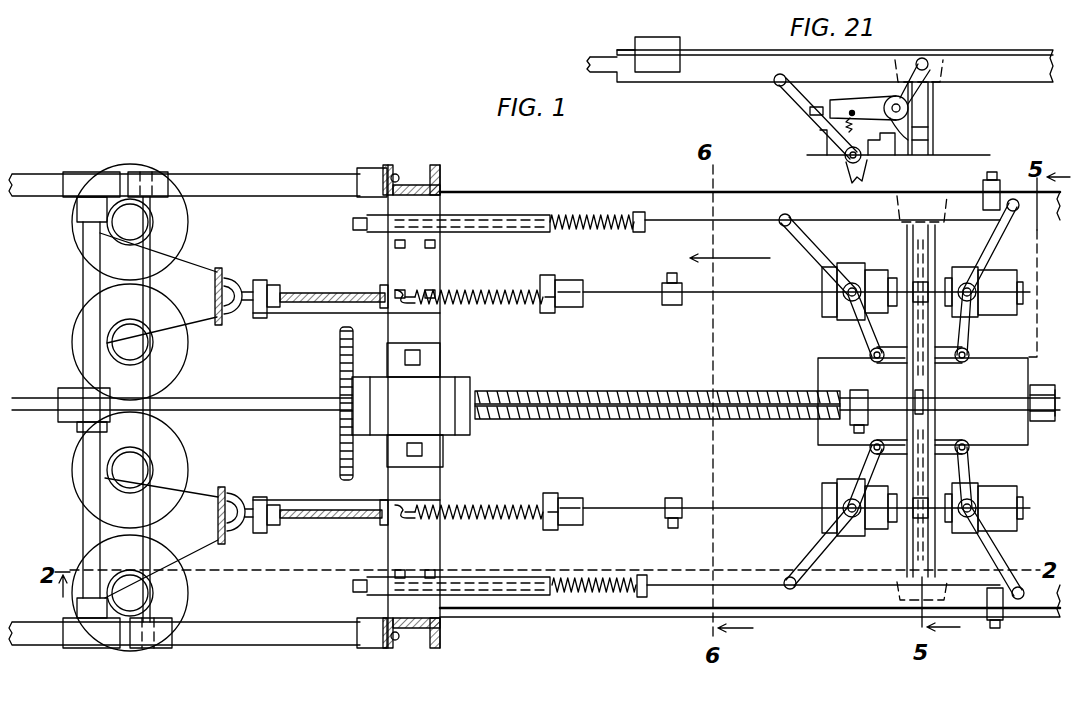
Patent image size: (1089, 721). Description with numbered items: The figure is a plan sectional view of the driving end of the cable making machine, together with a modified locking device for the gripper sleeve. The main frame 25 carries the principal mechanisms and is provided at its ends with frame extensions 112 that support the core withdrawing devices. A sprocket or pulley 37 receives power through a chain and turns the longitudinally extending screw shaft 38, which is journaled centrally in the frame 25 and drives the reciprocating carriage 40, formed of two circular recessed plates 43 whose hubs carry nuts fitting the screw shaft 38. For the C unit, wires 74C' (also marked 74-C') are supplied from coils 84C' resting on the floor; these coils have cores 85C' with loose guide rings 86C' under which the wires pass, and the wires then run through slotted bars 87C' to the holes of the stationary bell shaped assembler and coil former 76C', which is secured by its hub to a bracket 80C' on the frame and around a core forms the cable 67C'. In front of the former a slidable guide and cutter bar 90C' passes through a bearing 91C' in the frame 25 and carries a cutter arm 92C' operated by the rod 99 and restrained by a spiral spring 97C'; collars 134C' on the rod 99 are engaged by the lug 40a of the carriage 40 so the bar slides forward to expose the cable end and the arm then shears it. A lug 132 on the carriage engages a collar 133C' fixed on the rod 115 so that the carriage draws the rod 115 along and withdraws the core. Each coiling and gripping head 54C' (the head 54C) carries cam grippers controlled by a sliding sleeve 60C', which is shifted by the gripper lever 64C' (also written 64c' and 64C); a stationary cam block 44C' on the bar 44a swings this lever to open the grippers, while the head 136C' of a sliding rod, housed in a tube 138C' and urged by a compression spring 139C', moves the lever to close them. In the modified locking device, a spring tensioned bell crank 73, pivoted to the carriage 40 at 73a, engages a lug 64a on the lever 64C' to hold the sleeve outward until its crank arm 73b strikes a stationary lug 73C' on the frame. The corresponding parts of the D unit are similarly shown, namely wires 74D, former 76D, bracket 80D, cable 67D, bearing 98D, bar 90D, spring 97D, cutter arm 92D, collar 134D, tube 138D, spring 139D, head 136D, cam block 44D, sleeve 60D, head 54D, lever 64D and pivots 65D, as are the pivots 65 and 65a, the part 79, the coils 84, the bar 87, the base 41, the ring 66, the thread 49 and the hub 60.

In FIG. 1, the frame extensions 112 is at (232, 187).
In FIG. 1, the rod 115 is at (298, 403).
In FIG. 1, the vertical bar 87 is at (149, 533).
In FIG. 1, the slotted bars 87C' is at (173, 288).
In FIG. 1, the coils 84C' is at (155, 262).
In FIG. 1, the cores 85C' is at (91, 262).
In FIG. 1, the guide rings 86C' is at (72, 257).
In FIG. 1, the wheel 84 is at (165, 452).
In FIG. 1, the wires 74-C' is at (173, 285).
In FIG. 1, the wires 74C' is at (217, 339).
In FIG. 1, the lever 74D is at (197, 490).
In FIG. 1, the assembler and coil former 76C' is at (244, 283).
In FIG. 1, the fork 76D is at (232, 492).
In FIG. 1, the pin 79 is at (270, 293).
In FIG. 1, the bracket 80C' is at (346, 314).
In FIG. 1, the slide block 80D is at (260, 537).
In FIG. 1, the cable 67C' is at (332, 276).
In FIG. 1, the rod 67D is at (333, 517).
In FIG. 1, the bearing 91C' is at (413, 283).
In FIG. 1, the collar 98D is at (383, 530).
In FIG. 1, the main frame 25 is at (445, 637).
In FIG. 21, the main frame 25 is at (695, 73).
In FIG. 1, the sprocket or pulley 37 is at (338, 379).
In FIG. 1, the screw shaft 38 is at (598, 392).
In FIG. 1, the screw thread 49 is at (678, 397).
In FIG. 1, the guide and cutter bar 90C' is at (474, 318).
In FIG. 1, the spiral spring 97C' is at (462, 323).
In FIG. 1, the cutter arm 92C' is at (585, 286).
In FIG. 1, the rod 99 is at (775, 295).
In FIG. 1, the collar 134C' is at (661, 310).
In FIG. 1, the tube 138C' is at (451, 196).
In FIG. 1, the compression spring 139C' is at (579, 238).
In FIG. 1, the head 136C' is at (816, 231).
In FIG. 1, the rod 138D is at (500, 577).
In FIG. 1, the spring 139D is at (592, 577).
In FIG. 1, the collar 136D is at (650, 578).
In FIG. 1, the spring 90D is at (473, 503).
In FIG. 1, the spring rod 97D is at (502, 518).
In FIG. 1, the coupling 92D is at (575, 495).
In FIG. 1, the collar 134D is at (675, 497).
In FIG. 1, the bar 44a is at (893, 193).
In FIG. 1, the cam block 44C' is at (1013, 168).
In FIG. 1, the stop block 44D is at (987, 627).
In FIG. 1, the reciprocating carriage 40 is at (907, 547).
In FIG. 21, the reciprocating carriage 40 is at (932, 133).
In FIG. 1, the lug or ear 40a is at (918, 280).
In FIG. 1, the base 41 is at (897, 597).
In FIG. 1, the lug 132 is at (935, 390).
In FIG. 1, the collar 133C' is at (809, 393).
In FIG. 1, the recessed plates 43 is at (1013, 440).
In FIG. 1, the sleeve 60C' is at (812, 304).
In FIG. 1, the collar 66 is at (853, 263).
In FIG. 1, the coiling and gripping head 54C' is at (885, 273).
In FIG. 1, the coiling head 54C is at (984, 309).
In FIG. 1, the hub 60D is at (828, 488).
In FIG. 1, the pulley 54D is at (1010, 498).
In FIG. 1, the gripper lever 64C' is at (810, 285).
In FIG. 1, the gripper lever 64C is at (1002, 277).
In FIG. 1, the link 65a is at (872, 349).
In FIG. 1, the link 65 is at (972, 358).
In FIG. 1, the lever 64D is at (826, 530).
In FIG. 1, the link 65D is at (872, 450).
In FIG. 21, the stationary lug 73C' is at (677, 45).
In FIG. 21, the bell crank 73 is at (838, 107).
In FIG. 21, the pivot 73a is at (905, 108).
In FIG. 21, the crank arm 73b is at (925, 63).
In FIG. 21, the lug 64a is at (812, 113).
In FIG. 21, the gripper lever 64c' is at (786, 137).
In FIG. 21, the hub 60 is at (836, 152).